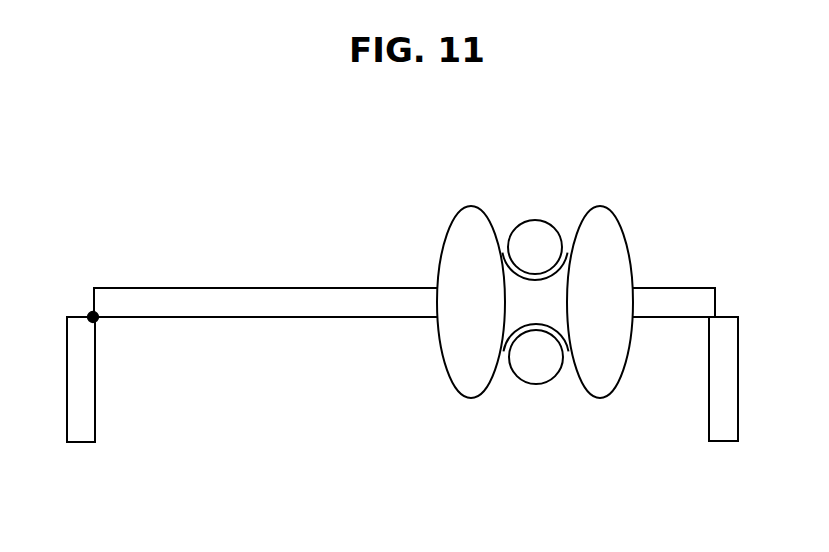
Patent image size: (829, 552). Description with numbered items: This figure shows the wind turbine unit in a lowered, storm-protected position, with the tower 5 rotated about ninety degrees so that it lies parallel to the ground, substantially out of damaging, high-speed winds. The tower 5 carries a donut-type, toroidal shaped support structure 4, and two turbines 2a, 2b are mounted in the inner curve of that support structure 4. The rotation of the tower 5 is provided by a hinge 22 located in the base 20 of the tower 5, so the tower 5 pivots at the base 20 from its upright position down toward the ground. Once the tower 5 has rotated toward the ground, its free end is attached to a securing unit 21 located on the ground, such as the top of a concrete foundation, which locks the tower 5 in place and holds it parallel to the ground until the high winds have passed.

The turbine 2a is at (535, 215).
The turbine 2b is at (536, 392).
The support structure 4 is at (448, 383).
The tower 5 is at (328, 307).
The base 20 is at (83, 435).
The securing unit 21 is at (720, 405).
The hinge 22 is at (92, 314).